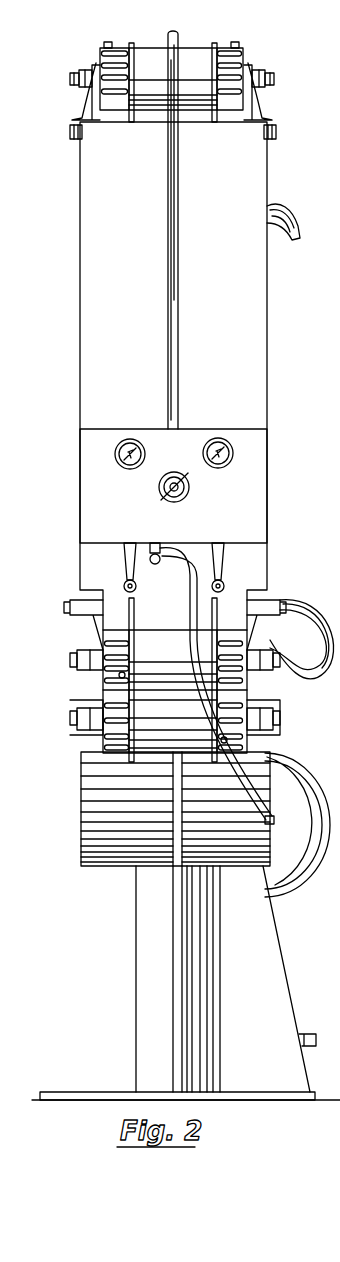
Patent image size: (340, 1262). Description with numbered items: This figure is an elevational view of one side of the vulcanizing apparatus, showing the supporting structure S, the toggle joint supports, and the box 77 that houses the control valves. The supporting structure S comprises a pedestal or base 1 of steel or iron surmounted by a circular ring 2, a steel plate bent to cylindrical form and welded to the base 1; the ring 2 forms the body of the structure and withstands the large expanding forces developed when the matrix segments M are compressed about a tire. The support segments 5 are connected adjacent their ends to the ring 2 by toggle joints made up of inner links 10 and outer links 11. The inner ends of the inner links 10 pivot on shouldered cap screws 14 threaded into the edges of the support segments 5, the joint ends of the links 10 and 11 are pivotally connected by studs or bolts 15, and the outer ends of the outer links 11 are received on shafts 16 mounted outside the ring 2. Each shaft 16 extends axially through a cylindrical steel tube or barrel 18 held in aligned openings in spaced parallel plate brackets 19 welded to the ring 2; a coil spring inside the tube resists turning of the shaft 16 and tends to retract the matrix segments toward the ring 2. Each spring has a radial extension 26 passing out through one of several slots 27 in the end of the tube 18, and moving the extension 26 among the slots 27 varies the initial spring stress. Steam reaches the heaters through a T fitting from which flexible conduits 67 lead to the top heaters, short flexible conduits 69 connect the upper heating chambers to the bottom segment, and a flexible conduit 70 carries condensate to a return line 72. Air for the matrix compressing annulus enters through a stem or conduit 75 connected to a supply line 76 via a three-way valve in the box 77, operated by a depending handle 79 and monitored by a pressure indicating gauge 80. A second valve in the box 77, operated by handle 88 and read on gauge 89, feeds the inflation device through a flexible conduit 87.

The pedestal or base 1 is at (175, 945).
The circular ring 2 is at (90, 284).
The supporting structure S is at (80, 232).
The outer link 11 is at (262, 105).
The stud or bolt 15 is at (68, 135).
The shaft 16 is at (70, 80).
The cylindrical steel tube or barrel 18 is at (178, 42).
The plate bracket 19 is at (134, 45).
The radial extension of spring 26 is at (107, 42).
The slot 27 is at (106, 78).
The flexible conduit 67 is at (300, 212).
The short flexible steam conduit 69 is at (326, 682).
The flexible conduit 70 is at (305, 870).
The return line 72 is at (310, 1034).
The stem or conduit 75 is at (212, 683).
The supply line 76 is at (168, 222).
The box 77 is at (80, 462).
The handle 79 is at (126, 567).
The pressure indicating gauge 80 is at (127, 440).
The flexible conduit 87 is at (245, 800).
The handle 88 is at (222, 568).
The pressure indicating gauge 89 is at (222, 440).
The inner link 10 is at (333, 265).
The shouldered cap screw 14 is at (333, 295).
The support segment 5 is at (339, 355).
The matrix segment M is at (331, 410).
The element T is at (332, 521).